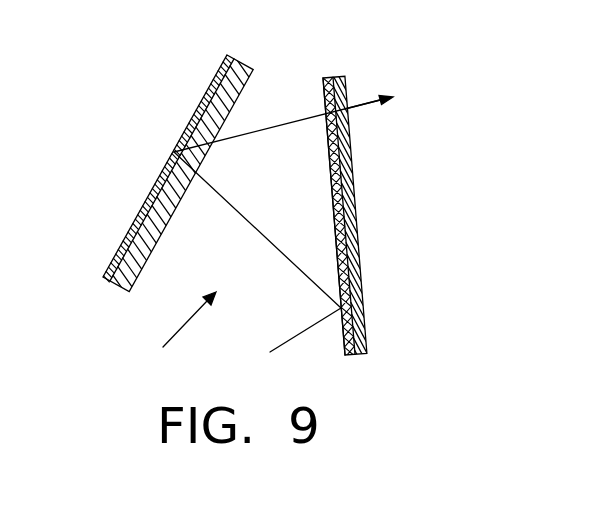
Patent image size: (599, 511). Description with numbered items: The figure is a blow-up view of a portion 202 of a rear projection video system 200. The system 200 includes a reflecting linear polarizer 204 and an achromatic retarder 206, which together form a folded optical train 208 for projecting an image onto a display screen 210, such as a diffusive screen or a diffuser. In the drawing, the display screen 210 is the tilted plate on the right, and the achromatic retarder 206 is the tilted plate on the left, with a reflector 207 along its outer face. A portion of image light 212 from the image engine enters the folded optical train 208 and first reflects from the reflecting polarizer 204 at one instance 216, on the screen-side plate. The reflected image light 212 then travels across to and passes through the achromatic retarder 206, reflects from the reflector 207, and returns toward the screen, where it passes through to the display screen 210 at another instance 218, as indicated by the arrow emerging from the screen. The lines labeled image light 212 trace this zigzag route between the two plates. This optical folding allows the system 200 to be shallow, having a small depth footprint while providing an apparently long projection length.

The rear projection video system 200 is at (349, 48).
The portion 202 is at (293, 58).
The reflecting linear polarizer 204 is at (331, 197).
The achromatic retarder 206 is at (155, 248).
The reflector 207 is at (195, 115).
The folded optical train 208 is at (177, 334).
The display screen 210 is at (355, 177).
The image light 212 is at (316, 112).
The instance 216 is at (338, 288).
The another instance 218 is at (353, 112).